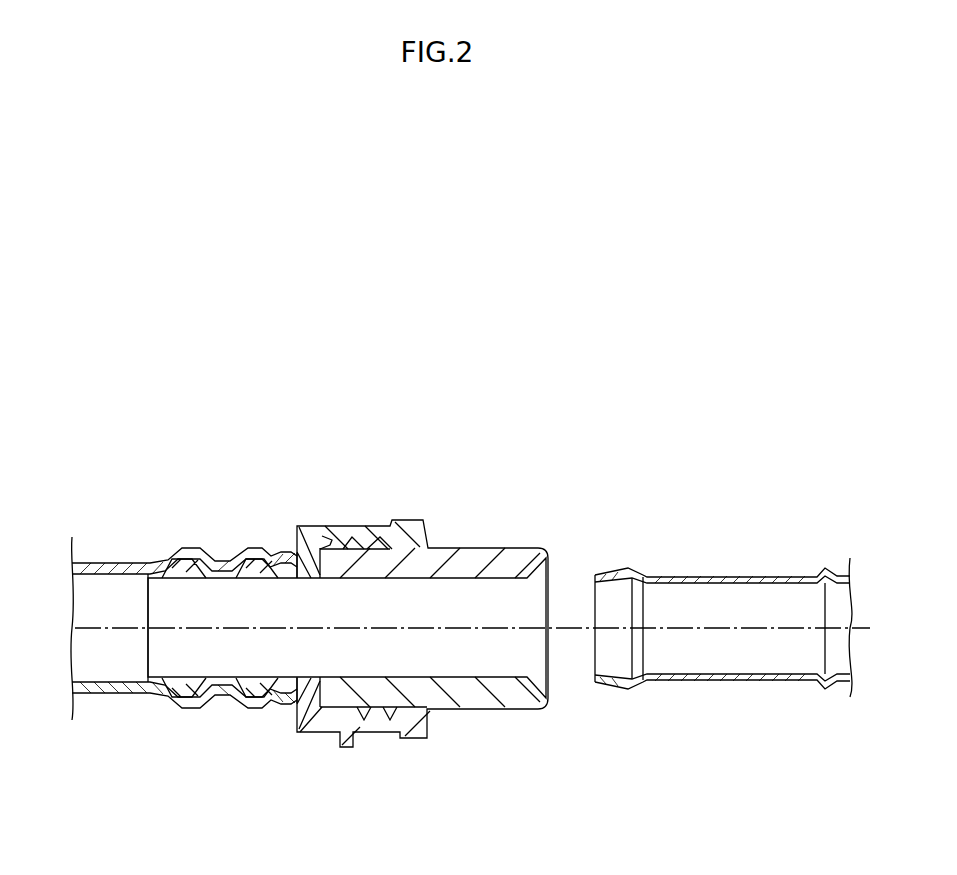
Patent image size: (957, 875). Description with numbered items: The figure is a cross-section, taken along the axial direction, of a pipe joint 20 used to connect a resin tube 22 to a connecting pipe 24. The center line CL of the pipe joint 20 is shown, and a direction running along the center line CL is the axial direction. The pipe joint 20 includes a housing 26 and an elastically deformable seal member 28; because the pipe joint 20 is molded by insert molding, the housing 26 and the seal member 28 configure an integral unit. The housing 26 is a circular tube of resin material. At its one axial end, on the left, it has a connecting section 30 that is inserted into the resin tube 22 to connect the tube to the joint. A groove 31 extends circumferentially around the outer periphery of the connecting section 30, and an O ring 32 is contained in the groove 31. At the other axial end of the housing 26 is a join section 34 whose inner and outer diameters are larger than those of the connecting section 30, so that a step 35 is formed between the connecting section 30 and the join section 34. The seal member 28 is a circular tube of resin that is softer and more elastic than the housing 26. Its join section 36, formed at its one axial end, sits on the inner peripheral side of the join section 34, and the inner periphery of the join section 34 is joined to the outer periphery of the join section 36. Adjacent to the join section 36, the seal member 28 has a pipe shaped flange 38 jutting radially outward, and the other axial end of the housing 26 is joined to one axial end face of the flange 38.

The pipe joint 20 is at (354, 608).
The resin tube 22 is at (102, 563).
The connecting pipe 24 is at (722, 576).
The housing 26 is at (332, 526).
The seal member 28 is at (517, 549).
The connecting section 30 is at (225, 690).
The groove 31 is at (203, 697).
The O ring 32 is at (192, 708).
The join section 34 is at (377, 526).
The step 35 is at (297, 542).
The join section 36 is at (352, 747).
The flange 38 is at (417, 740).
The center line CL is at (497, 630).